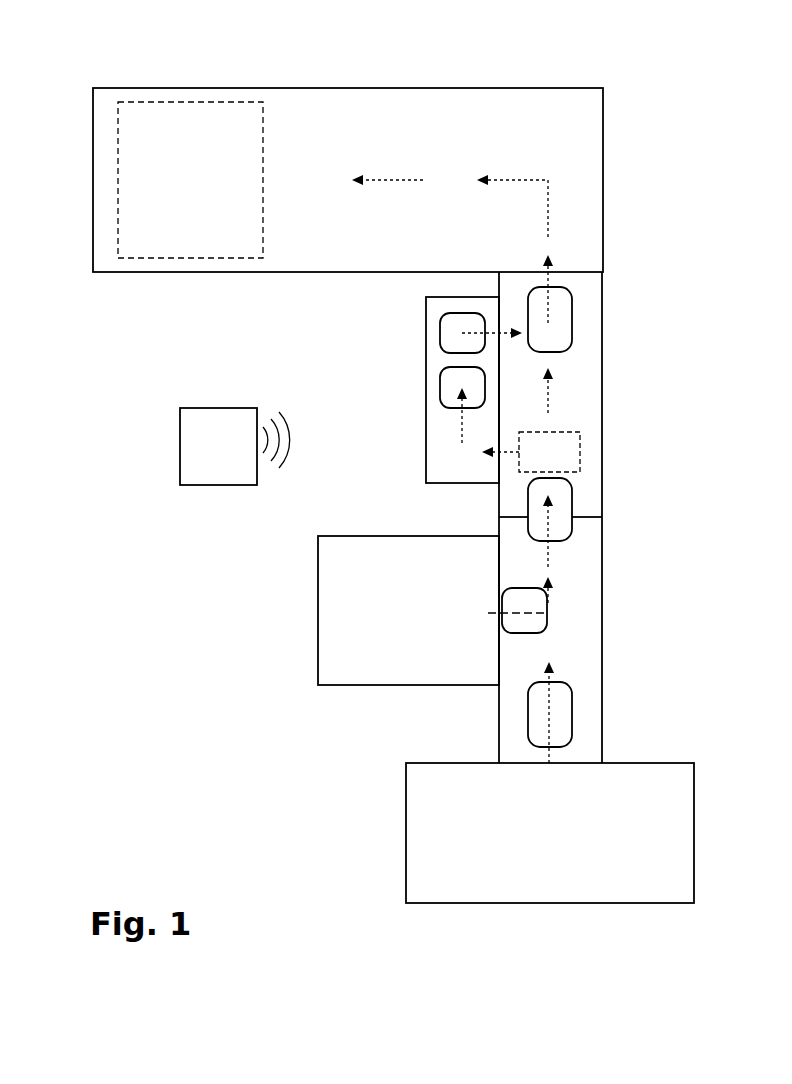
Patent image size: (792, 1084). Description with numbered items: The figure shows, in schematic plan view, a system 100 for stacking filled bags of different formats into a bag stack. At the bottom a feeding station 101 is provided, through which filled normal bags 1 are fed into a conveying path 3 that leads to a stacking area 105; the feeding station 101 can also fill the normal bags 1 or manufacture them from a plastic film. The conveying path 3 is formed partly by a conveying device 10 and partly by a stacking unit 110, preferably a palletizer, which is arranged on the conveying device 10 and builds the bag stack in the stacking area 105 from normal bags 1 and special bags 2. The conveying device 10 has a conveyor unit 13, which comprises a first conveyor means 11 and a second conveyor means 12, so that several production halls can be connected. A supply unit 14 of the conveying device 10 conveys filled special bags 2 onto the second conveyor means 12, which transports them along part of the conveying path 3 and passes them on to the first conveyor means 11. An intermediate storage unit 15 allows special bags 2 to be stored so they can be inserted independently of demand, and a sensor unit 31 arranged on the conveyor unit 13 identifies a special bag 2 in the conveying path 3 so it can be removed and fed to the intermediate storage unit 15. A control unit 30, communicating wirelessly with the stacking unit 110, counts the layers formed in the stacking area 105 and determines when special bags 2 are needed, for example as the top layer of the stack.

The system 100 is at (616, 74).
The stacking unit 110 is at (302, 103).
The stacking area 105 is at (178, 272).
The conveying device 10 is at (632, 272).
The normal bag 1 is at (565, 320).
The special bag 2 is at (452, 335).
The conveying path 3 is at (553, 408).
The sensor unit 31 is at (580, 452).
The first conveyor means 11 is at (587, 495).
The second conveyor means 12 is at (587, 592).
The conveyor unit 13 is at (707, 493).
The supply unit 14 is at (318, 658).
The intermediate storage unit 15 is at (436, 450).
The control unit 30 is at (210, 460).
The feeding station 101 is at (443, 813).